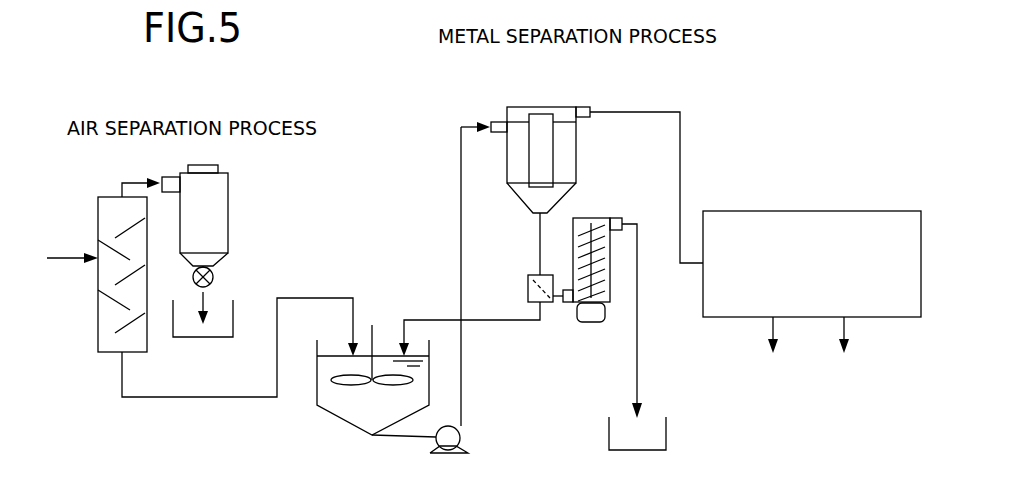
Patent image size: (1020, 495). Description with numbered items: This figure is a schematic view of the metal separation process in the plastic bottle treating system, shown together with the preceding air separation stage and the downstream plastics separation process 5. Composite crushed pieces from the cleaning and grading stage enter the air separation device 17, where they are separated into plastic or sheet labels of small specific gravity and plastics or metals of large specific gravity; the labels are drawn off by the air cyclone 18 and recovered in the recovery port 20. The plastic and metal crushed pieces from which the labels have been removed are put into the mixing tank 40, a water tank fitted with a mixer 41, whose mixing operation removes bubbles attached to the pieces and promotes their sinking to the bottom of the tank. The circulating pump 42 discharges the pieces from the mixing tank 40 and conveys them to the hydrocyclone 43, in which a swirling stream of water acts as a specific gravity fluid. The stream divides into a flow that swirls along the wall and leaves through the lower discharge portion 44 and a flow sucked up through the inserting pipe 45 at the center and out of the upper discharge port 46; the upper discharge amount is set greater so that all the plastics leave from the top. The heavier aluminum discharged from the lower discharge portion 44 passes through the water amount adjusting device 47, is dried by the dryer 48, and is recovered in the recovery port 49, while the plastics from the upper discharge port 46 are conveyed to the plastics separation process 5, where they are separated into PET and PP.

The plastics separation process 5 is at (760, 210).
The air separation device 17 is at (98, 222).
The air cyclone 18 is at (228, 227).
The recovery port 20 is at (187, 338).
The mixing tank 40 is at (317, 408).
The mixer 41 is at (373, 337).
The circulating pump 42 is at (460, 433).
The hydrocyclone 43 is at (567, 148).
The lower discharge portion 44 is at (533, 213).
The inserting pipe 45 is at (547, 165).
The upper discharge port 46 is at (582, 108).
The water amount adjusting device 47 is at (528, 283).
The dryer 48 is at (637, 360).
The recovery port 49 is at (667, 432).